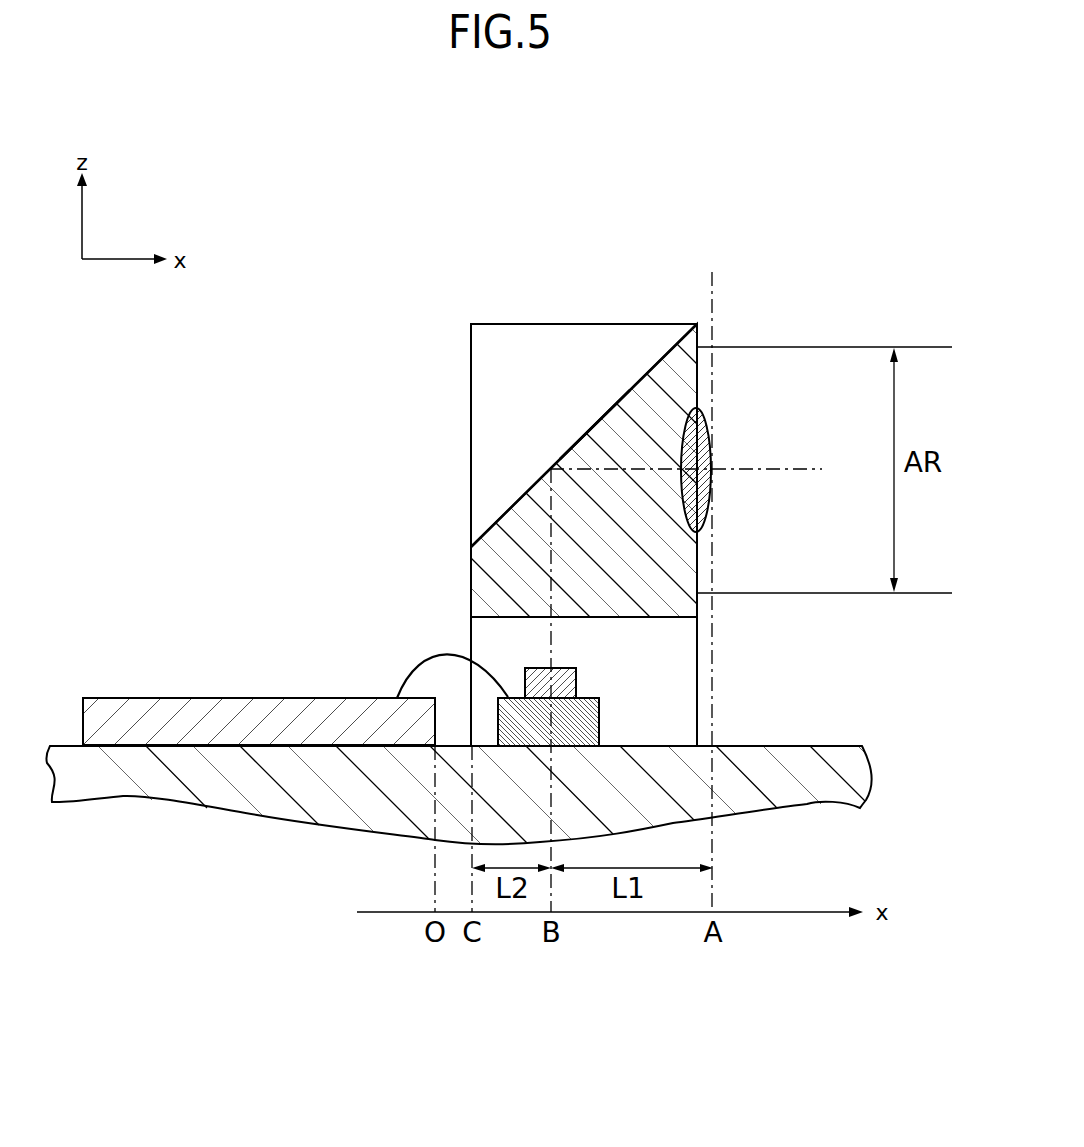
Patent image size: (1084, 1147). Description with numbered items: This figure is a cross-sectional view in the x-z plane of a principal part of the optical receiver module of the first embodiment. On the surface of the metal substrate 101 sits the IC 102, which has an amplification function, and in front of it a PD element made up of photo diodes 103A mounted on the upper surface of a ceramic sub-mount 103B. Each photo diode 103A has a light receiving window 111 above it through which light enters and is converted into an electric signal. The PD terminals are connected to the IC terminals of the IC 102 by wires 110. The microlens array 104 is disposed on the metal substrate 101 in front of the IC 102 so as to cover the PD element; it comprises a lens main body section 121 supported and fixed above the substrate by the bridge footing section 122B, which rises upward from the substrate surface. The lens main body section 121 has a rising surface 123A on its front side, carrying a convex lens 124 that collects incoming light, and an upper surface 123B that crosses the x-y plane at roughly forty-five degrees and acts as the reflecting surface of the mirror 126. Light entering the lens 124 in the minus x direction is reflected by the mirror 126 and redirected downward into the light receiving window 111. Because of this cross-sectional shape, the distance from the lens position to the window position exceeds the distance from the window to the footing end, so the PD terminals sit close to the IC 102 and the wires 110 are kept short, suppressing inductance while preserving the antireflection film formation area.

The metal substrate 101 is at (823, 792).
The IC 102 is at (182, 710).
The photo diode 103A is at (567, 681).
The sub-mount 103B is at (590, 718).
The microlens array 104 is at (659, 311).
The wire 110 is at (422, 667).
The light receiving window 111 is at (548, 668).
The lens main body section 121 is at (487, 583).
The bridge footing section 122B is at (485, 372).
The rising surface 123A is at (700, 372).
The upper surface 123B is at (612, 405).
The lens 124 is at (705, 443).
The mirror 126 is at (590, 423).